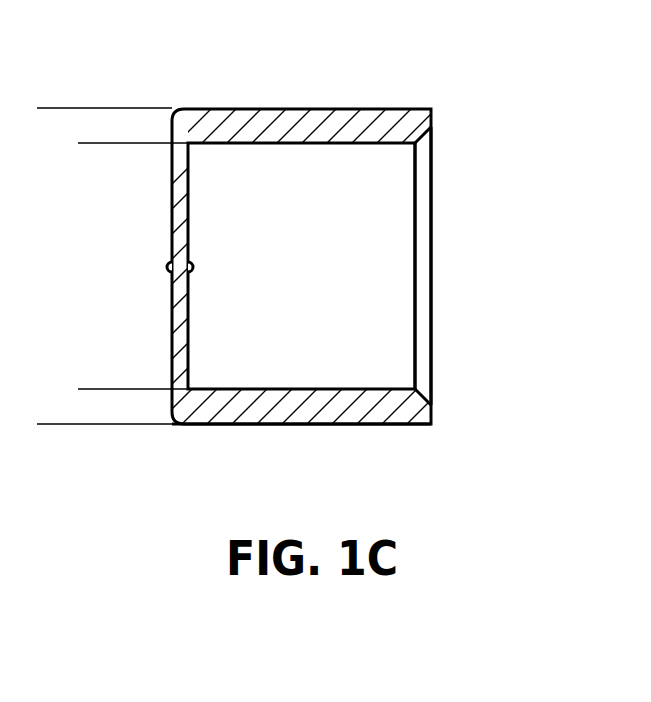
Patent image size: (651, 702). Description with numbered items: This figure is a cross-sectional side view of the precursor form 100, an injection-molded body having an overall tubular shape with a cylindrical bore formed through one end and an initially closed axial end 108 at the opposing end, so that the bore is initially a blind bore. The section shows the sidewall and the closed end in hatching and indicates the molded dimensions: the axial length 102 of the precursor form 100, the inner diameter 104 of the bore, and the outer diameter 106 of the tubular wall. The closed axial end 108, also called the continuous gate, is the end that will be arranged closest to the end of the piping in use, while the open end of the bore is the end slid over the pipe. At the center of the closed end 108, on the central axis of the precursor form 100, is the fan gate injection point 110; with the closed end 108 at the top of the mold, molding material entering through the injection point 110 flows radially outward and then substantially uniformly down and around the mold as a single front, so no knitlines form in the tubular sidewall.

The precursor form 100 is at (316, 80).
The axial length 102 is at (430, 435).
The inner diameter 104 is at (443, 145).
The outer diameter 106 is at (47, 109).
The closed axial end 108 is at (101, 144).
The fan gate injection point 110 is at (169, 263).